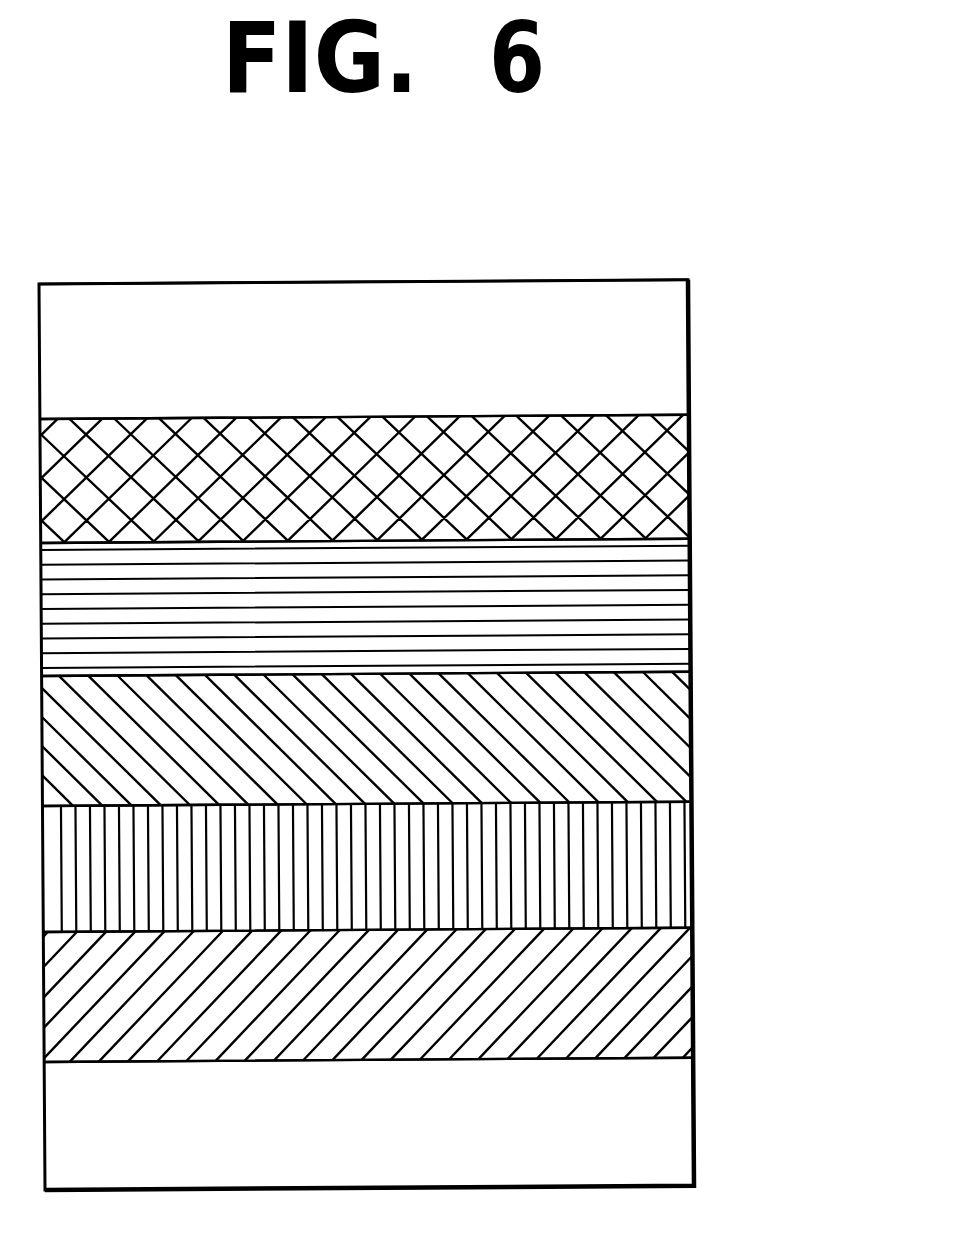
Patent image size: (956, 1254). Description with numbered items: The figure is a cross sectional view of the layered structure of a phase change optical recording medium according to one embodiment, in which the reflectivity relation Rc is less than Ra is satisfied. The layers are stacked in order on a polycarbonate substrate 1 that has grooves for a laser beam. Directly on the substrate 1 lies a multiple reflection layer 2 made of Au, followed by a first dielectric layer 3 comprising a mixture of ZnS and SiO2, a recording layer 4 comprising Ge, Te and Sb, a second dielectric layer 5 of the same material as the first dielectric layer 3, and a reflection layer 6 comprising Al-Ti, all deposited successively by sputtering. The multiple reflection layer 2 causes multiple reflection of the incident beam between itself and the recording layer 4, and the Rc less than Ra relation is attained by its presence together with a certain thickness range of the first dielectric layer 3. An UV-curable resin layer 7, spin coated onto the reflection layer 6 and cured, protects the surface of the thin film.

The substrate 1 is at (672, 1112).
The multiple reflection layer 2 is at (672, 988).
The first dielectric layer 3 is at (670, 860).
The recording layer 4 is at (667, 723).
The second dielectric layer 5 is at (667, 597).
The reflection layer 6 is at (676, 464).
The UV-curable resin layer 7 is at (667, 345).